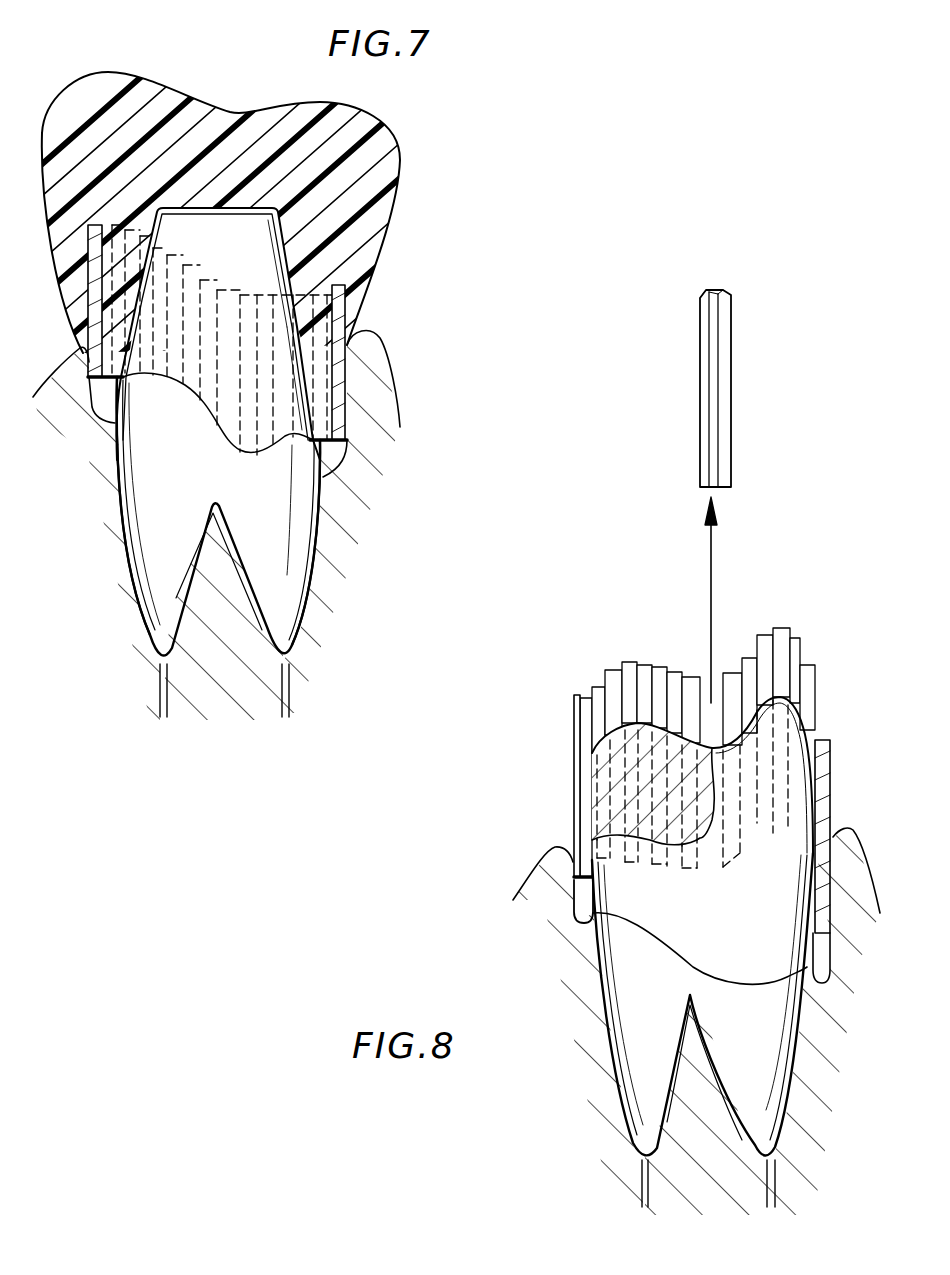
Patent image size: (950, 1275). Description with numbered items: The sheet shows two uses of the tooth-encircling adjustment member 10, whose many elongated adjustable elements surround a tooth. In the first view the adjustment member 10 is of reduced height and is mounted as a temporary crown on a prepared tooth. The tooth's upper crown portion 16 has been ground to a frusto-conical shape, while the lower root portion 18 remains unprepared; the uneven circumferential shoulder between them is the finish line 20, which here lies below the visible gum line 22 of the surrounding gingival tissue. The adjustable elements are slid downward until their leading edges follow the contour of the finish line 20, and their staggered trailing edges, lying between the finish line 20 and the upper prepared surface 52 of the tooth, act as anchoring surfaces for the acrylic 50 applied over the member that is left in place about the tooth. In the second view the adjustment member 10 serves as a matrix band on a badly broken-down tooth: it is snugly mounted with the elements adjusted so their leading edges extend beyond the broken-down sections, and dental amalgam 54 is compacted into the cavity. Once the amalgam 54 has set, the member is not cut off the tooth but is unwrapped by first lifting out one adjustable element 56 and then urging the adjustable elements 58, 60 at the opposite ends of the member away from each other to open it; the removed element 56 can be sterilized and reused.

In FIG. 7, the tooth-encircling adjustment member 10 is at (177, 340).
In FIG. 8, the tooth-encircling adjustment member 10 is at (675, 736).
In FIG. 7, the upper crown portion 16 is at (239, 343).
In FIG. 7, the lower root portion 18 is at (127, 577).
In FIG. 8, the lower root portion 18 is at (605, 1080).
In FIG. 7, the finish line 20 is at (265, 456).
In FIG. 8, the finish line 20 is at (702, 840).
In FIG. 7, the gum line 22 is at (355, 341).
In FIG. 8, the gum line 22 is at (833, 838).
In FIG. 7, the acrylic 50 is at (388, 147).
In FIG. 7, the upper prepared surface 52 is at (247, 208).
In FIG. 8, the dental amalgam 54 is at (603, 763).
In FIG. 8, the adjustable element 56 is at (733, 344).
In FIG. 8, the adjustable element 58 is at (698, 682).
In FIG. 8, the adjustable element 60 is at (728, 673).